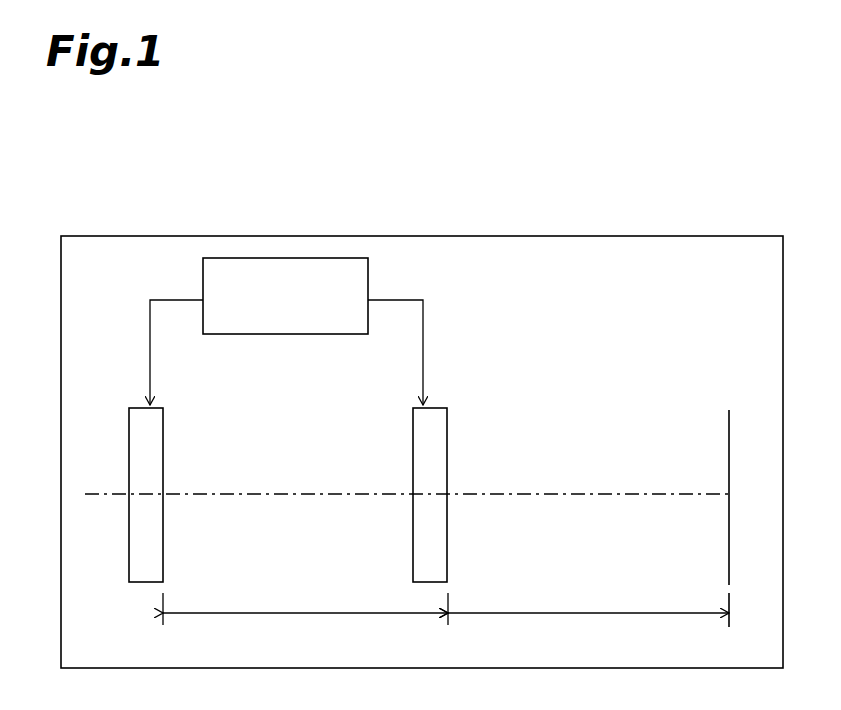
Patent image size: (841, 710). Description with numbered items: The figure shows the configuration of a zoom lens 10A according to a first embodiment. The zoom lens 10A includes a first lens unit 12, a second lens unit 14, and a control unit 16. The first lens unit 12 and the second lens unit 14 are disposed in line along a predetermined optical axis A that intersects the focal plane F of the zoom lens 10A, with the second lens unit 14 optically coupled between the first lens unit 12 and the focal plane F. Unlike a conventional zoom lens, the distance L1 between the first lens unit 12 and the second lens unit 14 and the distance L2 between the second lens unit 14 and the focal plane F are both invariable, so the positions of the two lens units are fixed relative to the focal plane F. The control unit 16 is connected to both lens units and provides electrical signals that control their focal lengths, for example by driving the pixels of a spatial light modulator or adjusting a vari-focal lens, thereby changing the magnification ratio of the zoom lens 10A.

The zoom lens 10A is at (696, 234).
The first lens unit 12 is at (135, 406).
The second lens unit 14 is at (440, 406).
The control unit 16 is at (317, 257).
The optical axis A is at (584, 494).
The focal plane F is at (728, 422).
The distance between the first lens unit and the second lens unit L1 is at (305, 608).
The distance between the second lens unit and the focal plane L2 is at (588, 604).